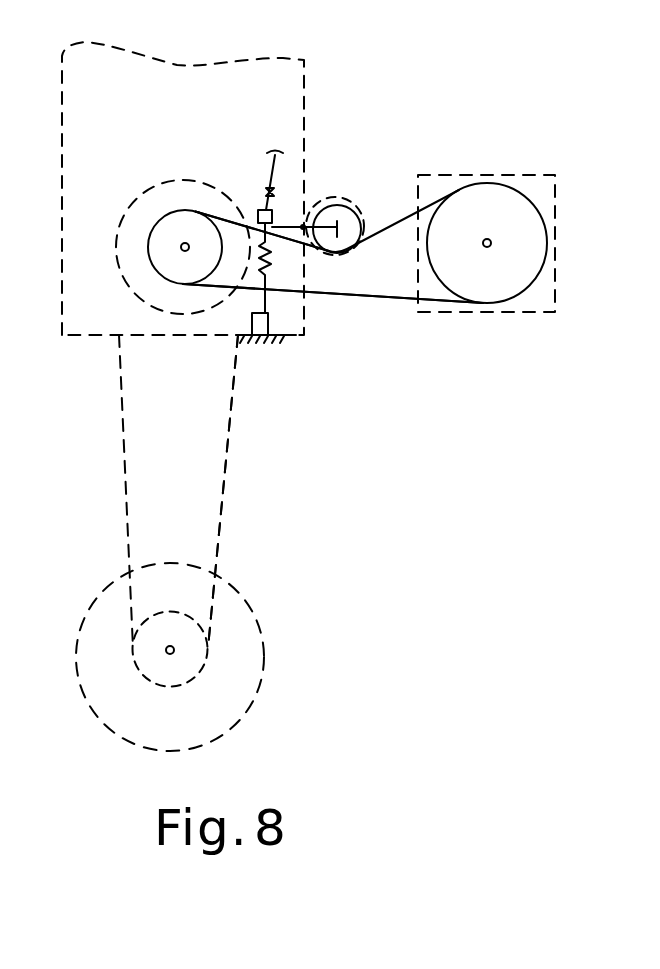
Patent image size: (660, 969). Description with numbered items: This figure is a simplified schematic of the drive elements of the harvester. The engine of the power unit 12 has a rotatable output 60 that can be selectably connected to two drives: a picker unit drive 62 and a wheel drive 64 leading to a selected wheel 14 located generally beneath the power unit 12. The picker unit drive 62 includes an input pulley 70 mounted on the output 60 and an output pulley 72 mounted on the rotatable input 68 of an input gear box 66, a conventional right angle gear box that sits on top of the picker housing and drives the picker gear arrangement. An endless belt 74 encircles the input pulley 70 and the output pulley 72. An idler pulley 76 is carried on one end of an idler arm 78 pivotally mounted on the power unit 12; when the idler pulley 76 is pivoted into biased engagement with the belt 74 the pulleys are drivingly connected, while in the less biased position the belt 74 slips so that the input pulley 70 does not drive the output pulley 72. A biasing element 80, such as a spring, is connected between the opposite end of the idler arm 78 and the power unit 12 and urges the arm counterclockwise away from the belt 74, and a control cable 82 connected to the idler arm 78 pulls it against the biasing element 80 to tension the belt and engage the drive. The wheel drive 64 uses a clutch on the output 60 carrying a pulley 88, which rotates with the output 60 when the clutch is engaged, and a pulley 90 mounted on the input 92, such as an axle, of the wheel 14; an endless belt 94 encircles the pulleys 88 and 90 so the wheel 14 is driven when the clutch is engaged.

The power unit 12 is at (309, 60).
The wheel 14 is at (252, 698).
The rotatable output 60 is at (182, 247).
The picker unit drive 62 is at (534, 205).
The wheel drive 64 is at (229, 472).
The input gear box 66 is at (490, 175).
The rotatable input 68 is at (491, 242).
The input pulley 70 is at (176, 210).
The output pulley 72 is at (447, 290).
The endless belt 74 is at (397, 298).
The idler pulley 76 is at (358, 225).
The idler arm 78 is at (287, 223).
The biasing element 80 is at (268, 304).
The control cable 82 is at (267, 160).
The pulley 88 is at (140, 193).
The pulley 90 is at (202, 670).
The input 92 is at (173, 645).
The endless belt 94 is at (222, 518).